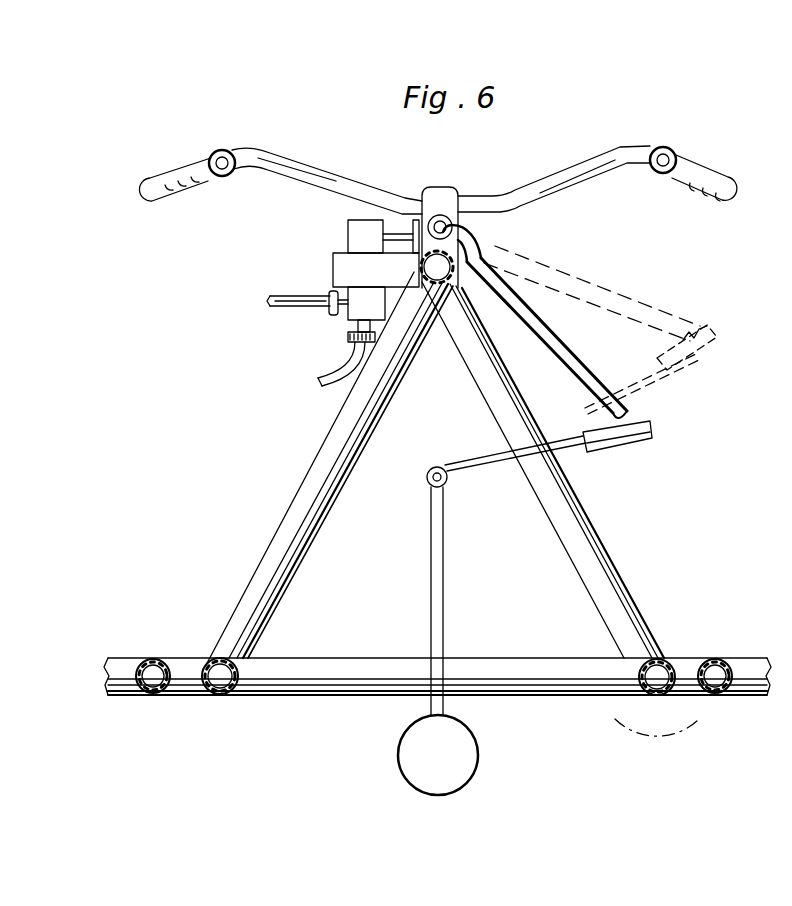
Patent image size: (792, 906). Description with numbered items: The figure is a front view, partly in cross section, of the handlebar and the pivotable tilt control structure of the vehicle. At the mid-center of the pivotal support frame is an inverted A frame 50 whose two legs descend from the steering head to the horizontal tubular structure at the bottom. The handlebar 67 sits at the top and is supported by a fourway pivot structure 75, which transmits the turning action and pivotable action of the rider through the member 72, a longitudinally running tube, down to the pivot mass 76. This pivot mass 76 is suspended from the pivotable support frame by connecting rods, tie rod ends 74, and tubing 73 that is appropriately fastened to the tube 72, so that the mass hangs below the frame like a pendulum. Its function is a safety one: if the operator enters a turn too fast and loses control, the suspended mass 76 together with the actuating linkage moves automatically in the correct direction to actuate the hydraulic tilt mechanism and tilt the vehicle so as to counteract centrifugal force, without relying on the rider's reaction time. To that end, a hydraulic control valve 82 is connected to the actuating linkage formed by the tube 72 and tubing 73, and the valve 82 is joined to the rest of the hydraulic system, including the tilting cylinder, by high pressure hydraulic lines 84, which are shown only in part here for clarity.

The inverted A frame 50 is at (480, 367).
The handlebar 67 is at (437, 168).
The member 72 is at (463, 194).
The tubing 73 is at (562, 358).
The tie rod ends 74 is at (614, 442).
The fourway pivot structure 75 is at (480, 473).
The pivot mass 76 is at (462, 740).
The hydraulic control valve 82 is at (360, 302).
The high pressure hydraulic lines 84 is at (332, 368).